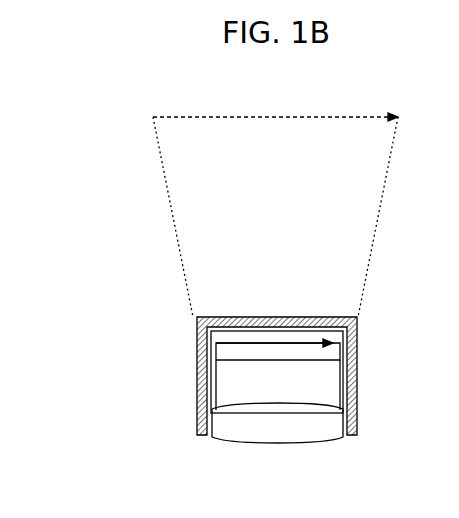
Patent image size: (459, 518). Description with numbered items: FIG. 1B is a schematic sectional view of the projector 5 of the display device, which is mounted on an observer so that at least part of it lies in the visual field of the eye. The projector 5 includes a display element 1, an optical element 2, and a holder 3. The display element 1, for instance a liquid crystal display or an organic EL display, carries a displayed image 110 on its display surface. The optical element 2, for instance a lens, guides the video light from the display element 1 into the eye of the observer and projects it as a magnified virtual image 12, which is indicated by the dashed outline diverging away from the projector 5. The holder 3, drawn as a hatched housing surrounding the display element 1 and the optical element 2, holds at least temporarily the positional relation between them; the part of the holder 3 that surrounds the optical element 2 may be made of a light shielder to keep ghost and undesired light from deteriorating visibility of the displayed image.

The display element 1 is at (245, 339).
The optical element 2 is at (245, 435).
The holder 3 is at (198, 423).
The projector 5 is at (163, 325).
The virtual image 12 is at (339, 117).
The displayed image 110 is at (296, 344).